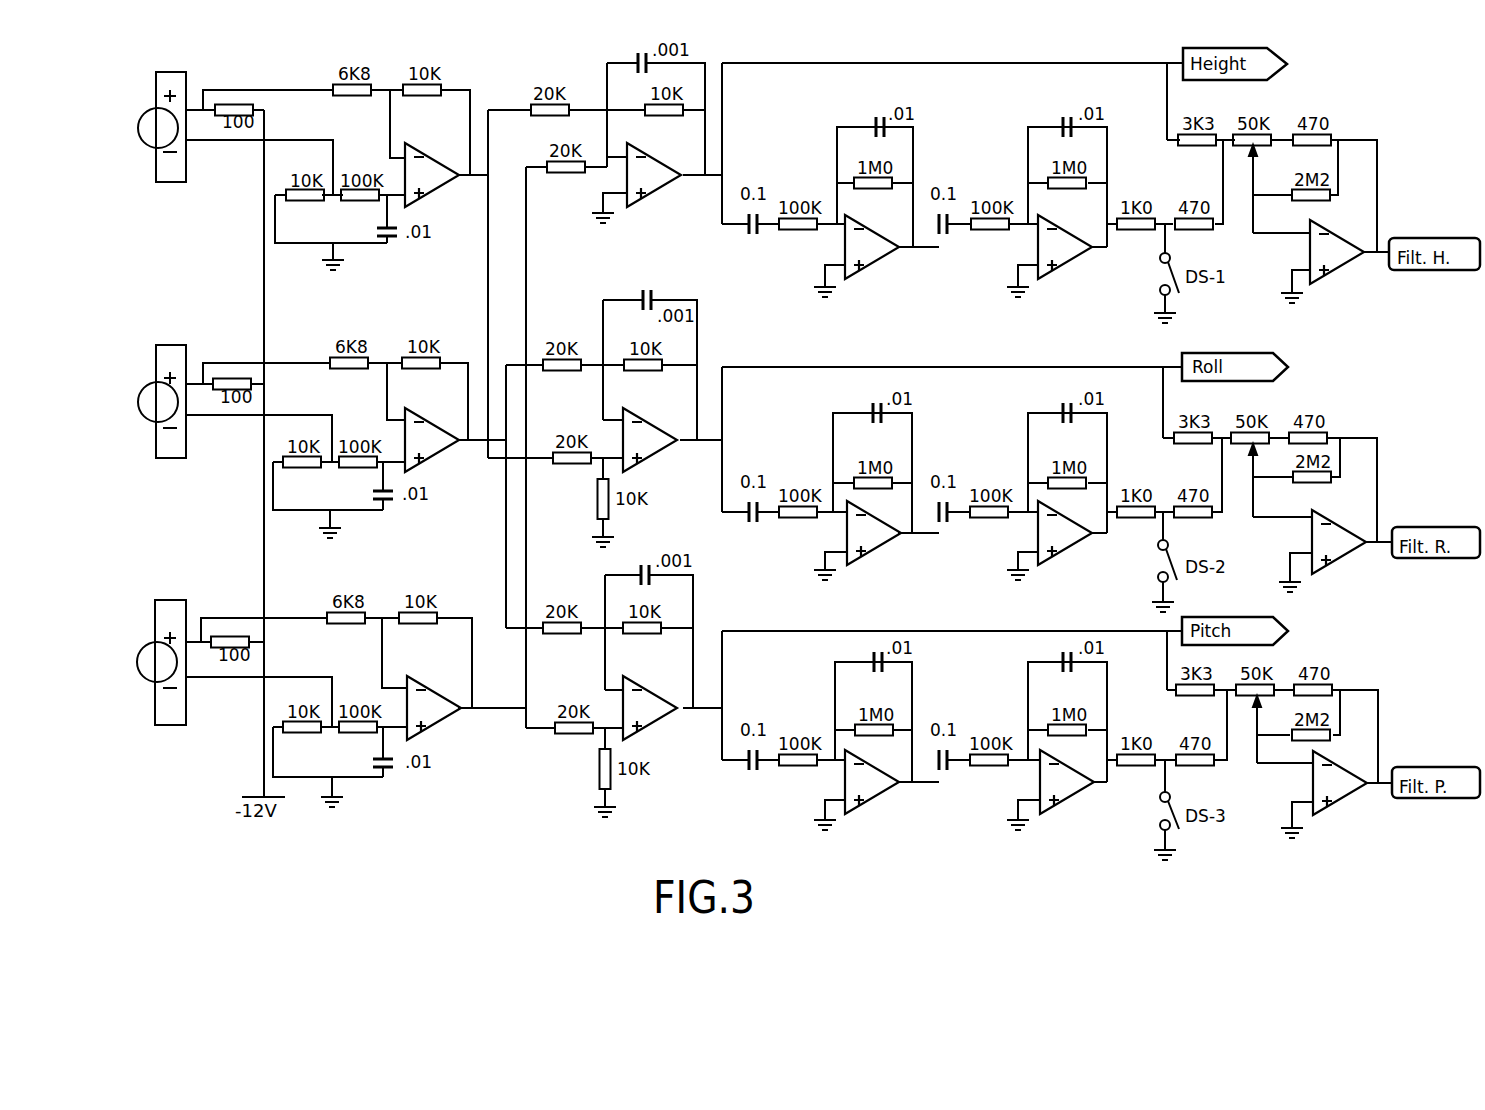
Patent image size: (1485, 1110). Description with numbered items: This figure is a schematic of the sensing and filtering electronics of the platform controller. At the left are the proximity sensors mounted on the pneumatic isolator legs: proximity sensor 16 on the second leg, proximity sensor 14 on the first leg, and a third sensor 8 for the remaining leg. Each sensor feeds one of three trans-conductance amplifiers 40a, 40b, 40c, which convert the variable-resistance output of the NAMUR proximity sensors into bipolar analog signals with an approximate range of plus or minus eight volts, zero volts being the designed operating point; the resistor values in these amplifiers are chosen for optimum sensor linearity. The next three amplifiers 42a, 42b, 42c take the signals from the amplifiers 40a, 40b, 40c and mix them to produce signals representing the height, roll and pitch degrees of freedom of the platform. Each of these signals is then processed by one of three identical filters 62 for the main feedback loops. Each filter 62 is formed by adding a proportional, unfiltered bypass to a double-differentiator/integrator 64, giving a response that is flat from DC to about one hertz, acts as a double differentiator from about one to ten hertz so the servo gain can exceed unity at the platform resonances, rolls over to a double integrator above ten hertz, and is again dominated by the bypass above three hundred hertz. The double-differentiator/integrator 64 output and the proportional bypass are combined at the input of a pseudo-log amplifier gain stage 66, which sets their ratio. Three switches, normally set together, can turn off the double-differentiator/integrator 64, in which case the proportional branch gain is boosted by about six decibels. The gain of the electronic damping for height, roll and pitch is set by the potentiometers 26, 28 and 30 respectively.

The proximity sensor 16 is at (152, 122).
The proximity sensor 14 is at (151, 393).
The pitch sensor 8 is at (150, 654).
The trans-conductance amplifier 40a is at (430, 170).
The trans-conductance amplifier 40b is at (431, 435).
The trans-conductance amplifier 40c is at (432, 704).
The mixing amplifier 42a is at (662, 166).
The mixing amplifier 42b is at (651, 433).
The mixing amplifier 42c is at (656, 703).
The potentiometer 26 is at (1245, 150).
The potentiometer 28 is at (1243, 447).
The potentiometer 30 is at (1247, 702).
The double-differentiator/integrator 64 is at (944, 812).
The filter 62 is at (1105, 852).
The pseudo-log amplifier gain stage 66 is at (1300, 857).